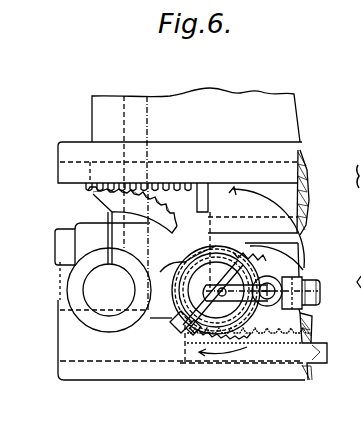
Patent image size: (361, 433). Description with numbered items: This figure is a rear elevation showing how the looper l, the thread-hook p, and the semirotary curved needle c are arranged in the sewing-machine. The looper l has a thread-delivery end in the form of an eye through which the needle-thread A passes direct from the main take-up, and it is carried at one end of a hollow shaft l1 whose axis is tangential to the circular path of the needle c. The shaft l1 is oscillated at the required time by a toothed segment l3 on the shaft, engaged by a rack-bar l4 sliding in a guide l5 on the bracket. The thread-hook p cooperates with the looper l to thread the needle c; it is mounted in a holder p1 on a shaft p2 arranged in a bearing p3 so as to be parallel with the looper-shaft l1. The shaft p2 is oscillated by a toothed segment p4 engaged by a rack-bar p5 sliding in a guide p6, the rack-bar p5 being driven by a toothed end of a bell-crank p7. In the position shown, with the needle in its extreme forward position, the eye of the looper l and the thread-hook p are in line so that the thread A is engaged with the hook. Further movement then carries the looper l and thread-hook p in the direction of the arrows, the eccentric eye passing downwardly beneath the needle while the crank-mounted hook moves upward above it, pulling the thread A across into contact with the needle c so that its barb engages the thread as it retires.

The thread-hook p is at (222, 296).
The holder p1 is at (306, 262).
The shaft p2 is at (180, 301).
The bearing p3 is at (215, 187).
The toothed segment p4 is at (94, 207).
The rack-bar p5 is at (208, 143).
The guide p6 is at (307, 137).
The bell-crank p7 is at (349, 260).
The looper l is at (222, 289).
The shaft l1 is at (253, 310).
The toothed segment l3 is at (272, 275).
The rack-bar l4 is at (327, 355).
The guide l5 is at (264, 377).
The semirotary curved needle c is at (222, 292).
The needle-thread A is at (260, 248).